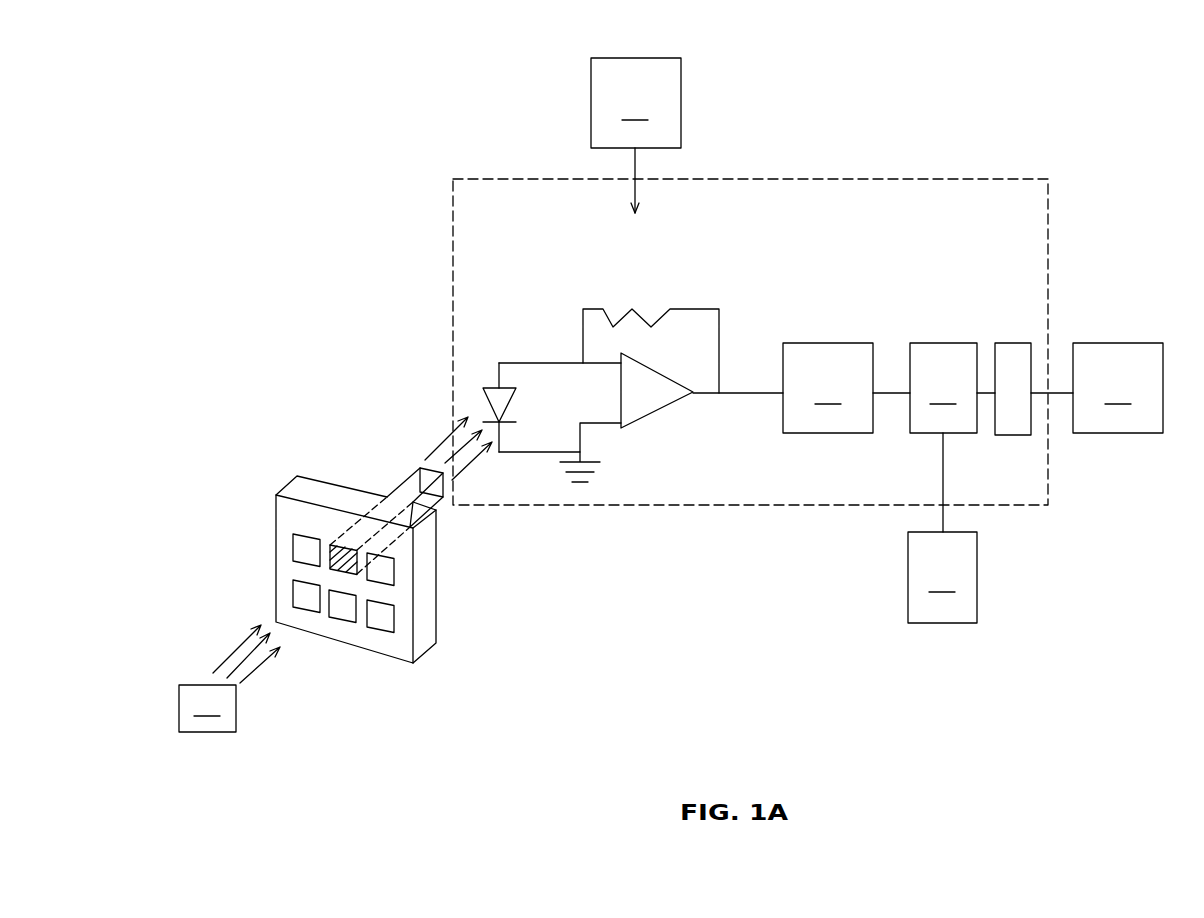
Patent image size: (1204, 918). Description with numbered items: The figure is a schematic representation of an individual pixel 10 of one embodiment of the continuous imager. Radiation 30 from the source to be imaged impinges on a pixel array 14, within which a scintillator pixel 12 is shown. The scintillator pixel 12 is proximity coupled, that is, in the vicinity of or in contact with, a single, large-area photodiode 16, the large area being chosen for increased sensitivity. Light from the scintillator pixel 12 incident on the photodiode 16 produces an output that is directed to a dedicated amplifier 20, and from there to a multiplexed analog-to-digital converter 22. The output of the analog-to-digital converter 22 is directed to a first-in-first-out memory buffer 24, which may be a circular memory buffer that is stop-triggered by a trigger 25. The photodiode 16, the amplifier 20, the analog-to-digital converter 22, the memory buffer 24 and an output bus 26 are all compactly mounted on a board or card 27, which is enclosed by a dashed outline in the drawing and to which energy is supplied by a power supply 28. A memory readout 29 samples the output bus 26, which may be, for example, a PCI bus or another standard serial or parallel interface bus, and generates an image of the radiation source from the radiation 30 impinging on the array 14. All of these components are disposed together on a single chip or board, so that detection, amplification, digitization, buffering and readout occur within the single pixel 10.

The pixel 10 is at (862, 132).
The scintillator pixel 12 is at (332, 570).
The pixel array 14 is at (320, 502).
The photodiode 16 is at (510, 406).
The amplifier 20 is at (653, 413).
The analog-to-digital converter 22 is at (828, 388).
The first-in-first-out memory buffer 24 is at (943, 388).
The trigger 25 is at (942, 577).
The output bus 26 is at (1012, 343).
The board 27 is at (1050, 212).
The power supply 28 is at (636, 135).
The memory readout 29 is at (1118, 388).
The radiation 30 is at (229, 678).